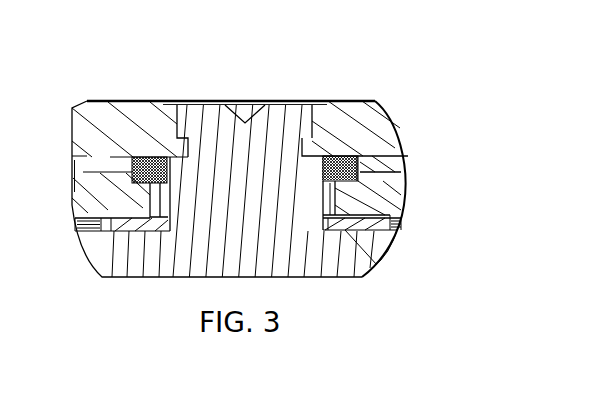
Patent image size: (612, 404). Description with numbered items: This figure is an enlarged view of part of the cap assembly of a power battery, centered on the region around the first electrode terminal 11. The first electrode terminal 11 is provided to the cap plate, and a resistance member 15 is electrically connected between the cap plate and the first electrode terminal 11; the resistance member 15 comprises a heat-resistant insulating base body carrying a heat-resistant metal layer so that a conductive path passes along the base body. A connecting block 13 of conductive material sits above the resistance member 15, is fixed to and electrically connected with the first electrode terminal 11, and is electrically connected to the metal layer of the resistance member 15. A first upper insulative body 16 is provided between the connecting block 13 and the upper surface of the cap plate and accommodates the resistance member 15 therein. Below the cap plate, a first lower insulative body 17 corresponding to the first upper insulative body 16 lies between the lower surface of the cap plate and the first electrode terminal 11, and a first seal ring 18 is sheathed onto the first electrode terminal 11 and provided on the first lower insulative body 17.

The first electrode terminal 11 is at (245, 125).
The connecting block 13 is at (344, 118).
The resistance member 15 is at (150, 162).
The first upper insulative body 16 is at (393, 162).
The first lower insulative body 17 is at (397, 225).
The first seal ring 18 is at (340, 222).